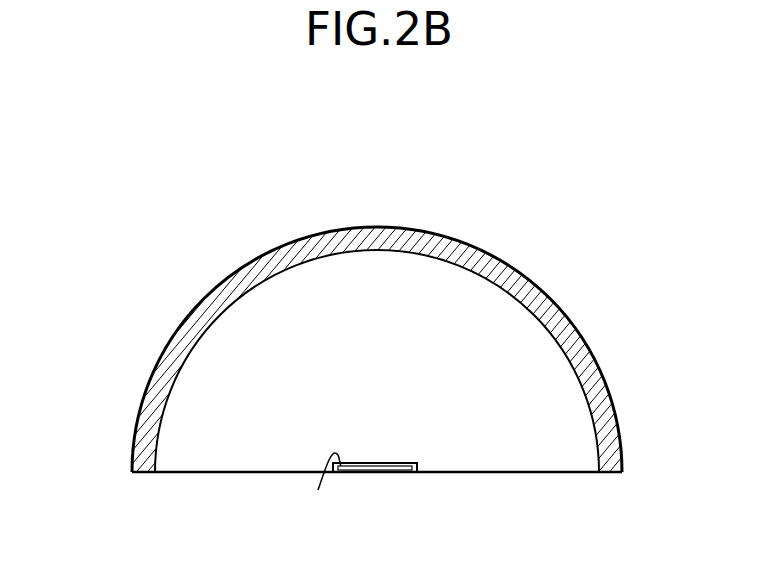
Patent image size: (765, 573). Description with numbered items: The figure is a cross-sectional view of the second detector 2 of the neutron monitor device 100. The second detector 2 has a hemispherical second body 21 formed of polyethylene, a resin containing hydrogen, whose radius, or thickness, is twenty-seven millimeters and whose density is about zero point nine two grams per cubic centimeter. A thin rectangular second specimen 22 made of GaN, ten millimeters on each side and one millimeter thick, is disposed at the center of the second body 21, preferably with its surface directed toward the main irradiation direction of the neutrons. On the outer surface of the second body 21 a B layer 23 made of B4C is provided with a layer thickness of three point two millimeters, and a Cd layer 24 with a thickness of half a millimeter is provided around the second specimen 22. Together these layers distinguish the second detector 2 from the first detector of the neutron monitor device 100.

The neutron monitor device 100 is at (612, 178).
The second detector 2 is at (233, 221).
The B layer 23 is at (527, 276).
The second body 21 is at (184, 405).
The second specimen 22 is at (400, 473).
The Cd layer 24 is at (318, 490).